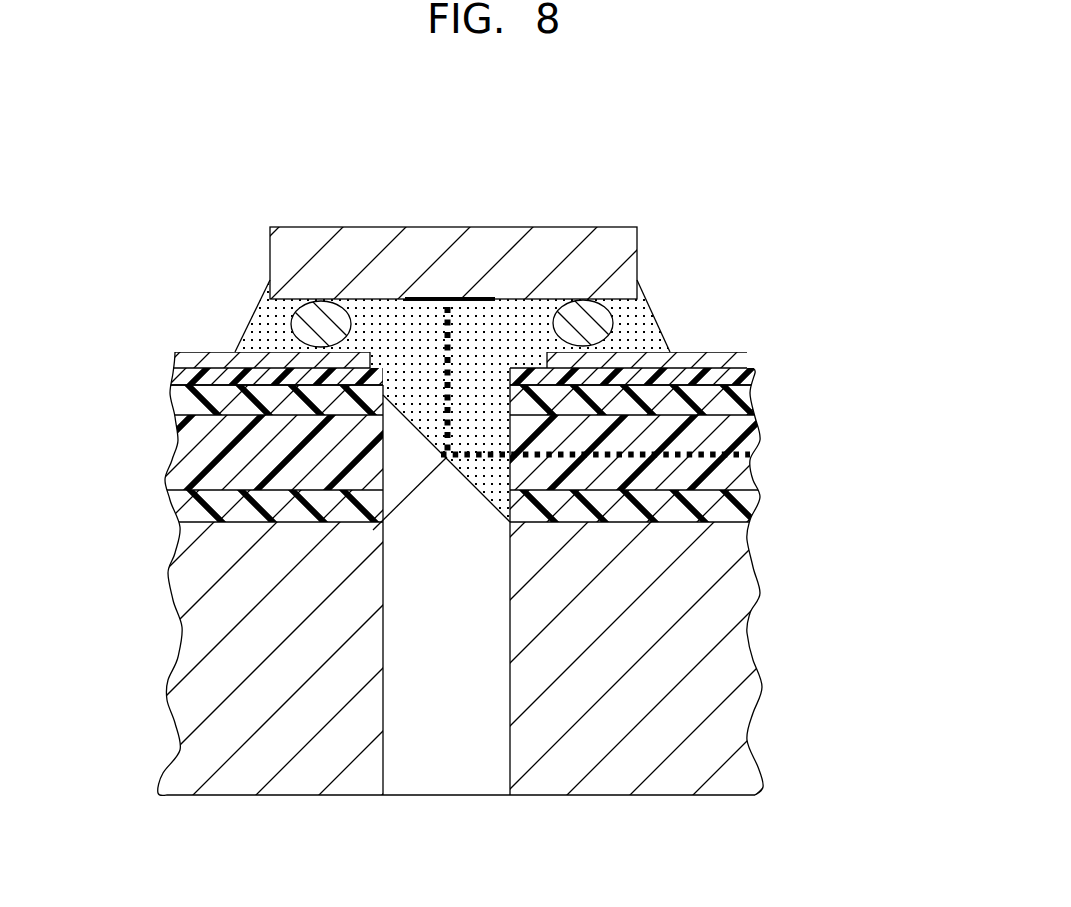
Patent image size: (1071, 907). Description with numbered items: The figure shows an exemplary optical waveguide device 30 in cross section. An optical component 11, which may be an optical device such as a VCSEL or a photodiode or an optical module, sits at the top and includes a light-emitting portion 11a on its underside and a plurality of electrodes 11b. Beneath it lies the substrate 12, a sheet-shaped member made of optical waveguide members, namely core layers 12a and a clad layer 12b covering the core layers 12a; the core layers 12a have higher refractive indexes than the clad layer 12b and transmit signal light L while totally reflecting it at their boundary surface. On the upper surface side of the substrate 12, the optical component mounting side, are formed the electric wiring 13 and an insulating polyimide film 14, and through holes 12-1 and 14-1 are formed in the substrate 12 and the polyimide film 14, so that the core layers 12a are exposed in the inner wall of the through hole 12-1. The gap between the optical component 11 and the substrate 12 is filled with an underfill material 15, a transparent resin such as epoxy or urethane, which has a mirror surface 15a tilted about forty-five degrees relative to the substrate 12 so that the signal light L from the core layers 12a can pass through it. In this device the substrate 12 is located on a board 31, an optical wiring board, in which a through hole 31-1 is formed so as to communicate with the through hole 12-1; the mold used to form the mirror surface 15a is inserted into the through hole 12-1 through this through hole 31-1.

The optical waveguide device 30 is at (133, 258).
The optical component 11 is at (637, 242).
The light-emitting portion 11a is at (490, 316).
The electrodes 11b is at (292, 326).
The substrate 12 is at (535, 450).
The core layers 12a is at (885, 395).
The clad layer 12b is at (748, 400).
The through hole 12-1 is at (383, 483).
The electric wiring 13 is at (178, 352).
The polyimide film 14 is at (178, 378).
The through hole 14-1 is at (512, 372).
The underfill material 15 is at (262, 300).
The mirror surface 15a is at (440, 455).
The board 31 is at (302, 778).
The through hole 31-1 is at (503, 755).
The signal light L is at (675, 500).